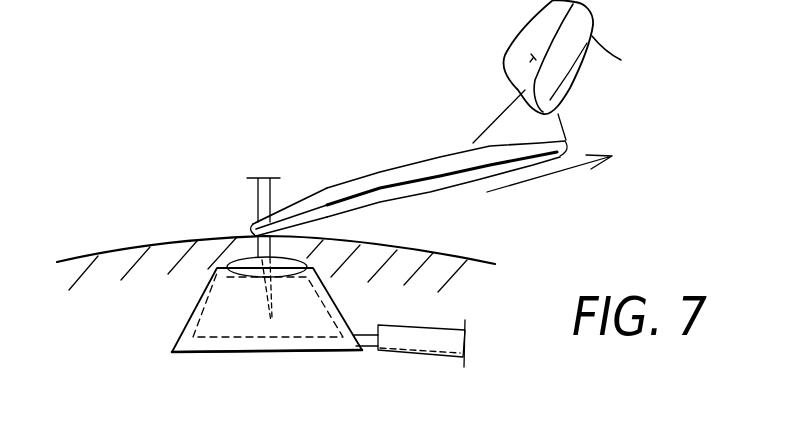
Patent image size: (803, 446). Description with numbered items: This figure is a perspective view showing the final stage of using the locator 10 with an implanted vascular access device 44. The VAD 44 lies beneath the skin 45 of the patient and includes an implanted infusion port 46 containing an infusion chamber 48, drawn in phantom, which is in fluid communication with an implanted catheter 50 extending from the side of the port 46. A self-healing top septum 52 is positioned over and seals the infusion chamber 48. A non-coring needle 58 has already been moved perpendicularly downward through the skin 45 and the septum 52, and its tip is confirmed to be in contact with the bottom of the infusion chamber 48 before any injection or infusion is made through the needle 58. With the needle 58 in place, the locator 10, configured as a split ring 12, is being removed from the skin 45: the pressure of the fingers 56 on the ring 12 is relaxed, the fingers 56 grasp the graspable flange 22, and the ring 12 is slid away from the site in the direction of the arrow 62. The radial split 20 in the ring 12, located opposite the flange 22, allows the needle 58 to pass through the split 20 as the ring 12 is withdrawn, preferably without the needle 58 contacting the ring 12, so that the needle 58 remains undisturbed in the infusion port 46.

The locator 10 is at (348, 148).
The split ring 12 is at (433, 190).
The radial split 20 is at (283, 195).
The graspable flange 22 is at (513, 115).
The vascular access device 44 is at (226, 364).
The skin 45 is at (178, 242).
The infusion port 46 is at (340, 312).
The infusion chamber 48 is at (247, 307).
The implanted catheter 50 is at (420, 343).
The top septum 52 is at (306, 257).
The fingers 56 is at (563, 53).
The needle 58 is at (258, 204).
The arrow 62 is at (547, 175).